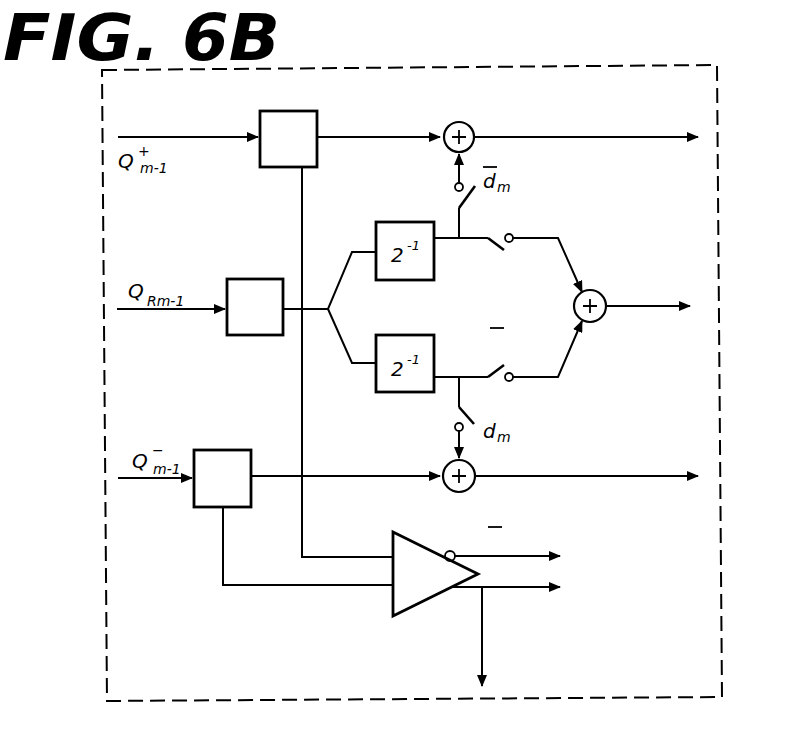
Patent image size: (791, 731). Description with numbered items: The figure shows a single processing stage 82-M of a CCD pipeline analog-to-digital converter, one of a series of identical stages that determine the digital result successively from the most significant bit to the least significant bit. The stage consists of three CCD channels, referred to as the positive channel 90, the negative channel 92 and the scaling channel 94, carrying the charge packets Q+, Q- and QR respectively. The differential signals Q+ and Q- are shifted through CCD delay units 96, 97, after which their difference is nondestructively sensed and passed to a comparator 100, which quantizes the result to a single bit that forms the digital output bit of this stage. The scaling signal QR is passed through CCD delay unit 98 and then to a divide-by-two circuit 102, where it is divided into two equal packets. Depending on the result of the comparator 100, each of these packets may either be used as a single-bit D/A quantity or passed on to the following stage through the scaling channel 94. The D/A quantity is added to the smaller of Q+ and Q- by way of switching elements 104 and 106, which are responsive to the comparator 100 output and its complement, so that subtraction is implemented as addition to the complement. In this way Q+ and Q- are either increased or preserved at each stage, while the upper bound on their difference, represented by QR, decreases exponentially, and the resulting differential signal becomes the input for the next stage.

The processing stage 82-M is at (470, 67).
The CCD delay unit 96 is at (293, 110).
The CCD delay unit 98 is at (247, 278).
The CCD delay unit 97 is at (215, 450).
The positive channel 90 is at (614, 152).
The scaling channel 94 is at (632, 314).
The negative channel 92 is at (637, 480).
The comparator 100 is at (423, 603).
The divide-by-two circuit 102 is at (327, 363).
The switching element 104 is at (492, 222).
The switch controlled by dm-bar 106 is at (503, 397).